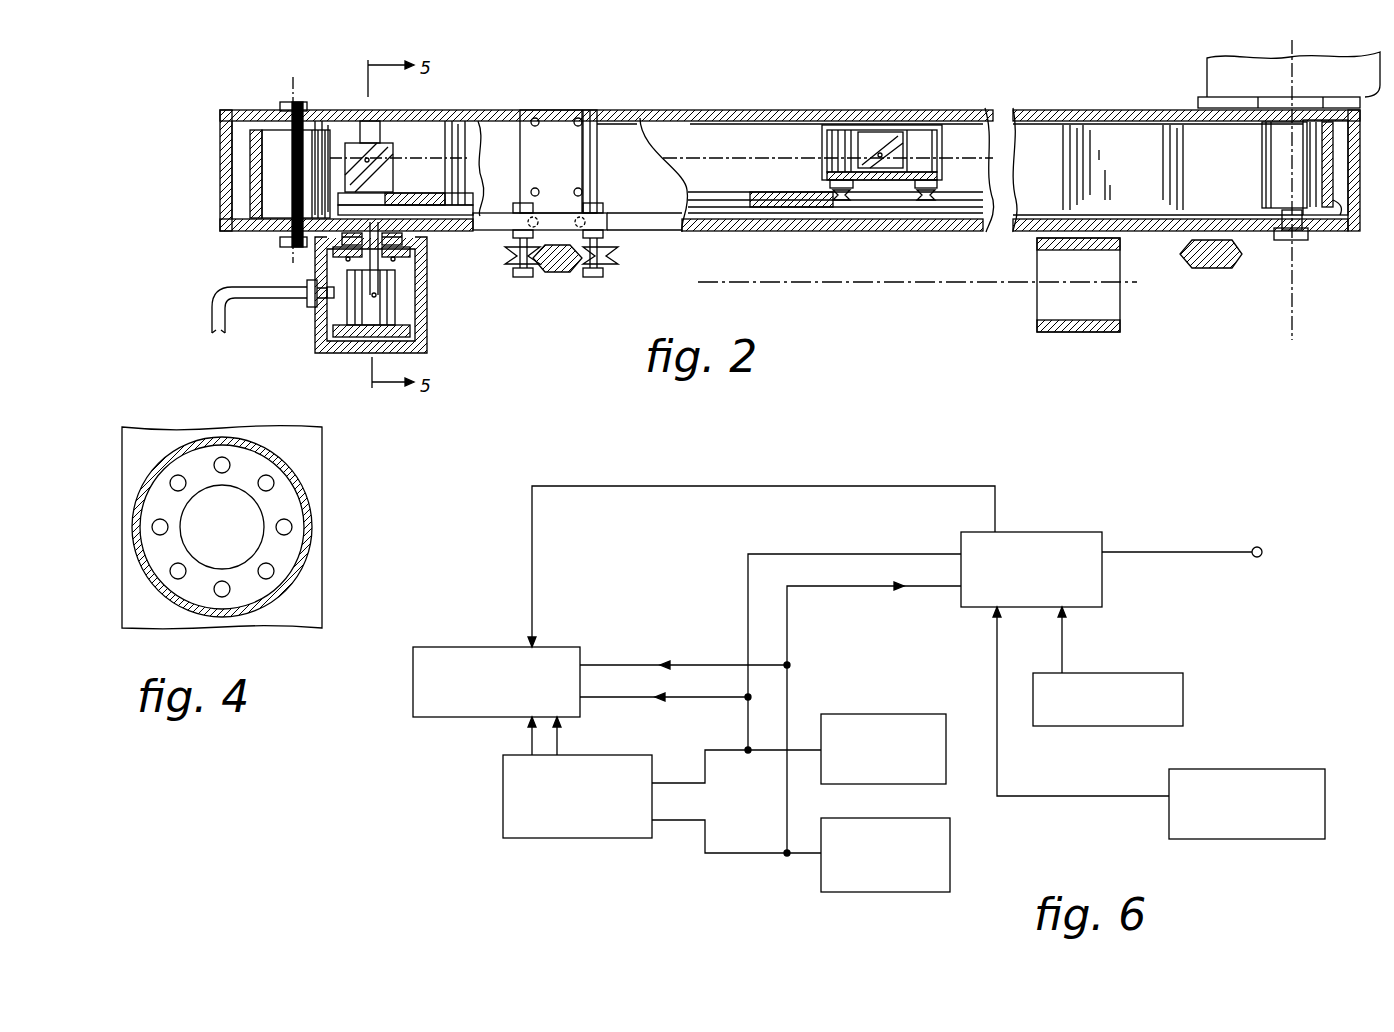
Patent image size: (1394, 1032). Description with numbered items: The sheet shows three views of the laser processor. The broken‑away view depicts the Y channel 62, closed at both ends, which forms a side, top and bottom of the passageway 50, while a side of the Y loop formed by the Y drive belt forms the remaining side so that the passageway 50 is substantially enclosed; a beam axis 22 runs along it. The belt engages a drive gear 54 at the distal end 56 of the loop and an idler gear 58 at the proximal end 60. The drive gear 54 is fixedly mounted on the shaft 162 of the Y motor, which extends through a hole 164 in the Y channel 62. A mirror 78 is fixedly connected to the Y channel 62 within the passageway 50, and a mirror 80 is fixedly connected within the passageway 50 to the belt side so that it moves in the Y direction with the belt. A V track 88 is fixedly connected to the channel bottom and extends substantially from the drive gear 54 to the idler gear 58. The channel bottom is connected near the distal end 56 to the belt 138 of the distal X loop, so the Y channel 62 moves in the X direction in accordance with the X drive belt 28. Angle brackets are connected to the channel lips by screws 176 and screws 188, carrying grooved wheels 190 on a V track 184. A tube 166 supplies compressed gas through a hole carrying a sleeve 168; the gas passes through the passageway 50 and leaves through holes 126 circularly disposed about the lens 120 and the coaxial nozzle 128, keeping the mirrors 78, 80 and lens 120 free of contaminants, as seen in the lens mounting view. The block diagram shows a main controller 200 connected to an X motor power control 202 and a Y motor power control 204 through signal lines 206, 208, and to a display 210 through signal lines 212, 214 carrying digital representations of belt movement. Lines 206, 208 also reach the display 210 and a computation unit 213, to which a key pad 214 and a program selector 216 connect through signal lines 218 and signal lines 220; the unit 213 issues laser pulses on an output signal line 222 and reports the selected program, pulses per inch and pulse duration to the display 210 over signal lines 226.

In FIG. 2, the laser beam axis 22 is at (720, 158).
In FIG. 2, the X drive belt 28 is at (318, 343).
In FIG. 2, the passageway 50 is at (752, 188).
In FIG. 2, the drive gear 54 is at (1294, 184).
In FIG. 2, the distal end 56 is at (1338, 205).
In FIG. 2, the idler gear 58 is at (300, 186).
In FIG. 2, the proximal end 60 is at (250, 165).
In FIG. 2, the Y channel 62 is at (808, 107).
In FIG. 2, the mirror 78 is at (395, 150).
In FIG. 2, the mirror 80 is at (915, 125).
In FIG. 2, the V track 88 is at (775, 207).
In FIG. 4, the lens 120 is at (242, 556).
In FIG. 4, the holes 126 is at (180, 478).
In FIG. 4, the nozzle 128 is at (305, 483).
In FIG. 2, the belt 138 is at (1058, 332).
In FIG. 2, the shaft 162 is at (1307, 232).
In FIG. 2, the hole 164 is at (1282, 127).
In FIG. 2, the tube 166 is at (215, 287).
In FIG. 2, the sleeve 168 is at (312, 305).
In FIG. 2, the screws 176 is at (1217, 268).
In FIG. 2, the V track 184 is at (558, 272).
In FIG. 2, the screws 188 is at (540, 120).
In FIG. 2, the grooved wheels 190 is at (505, 262).
In FIG. 6, the main controller 200 is at (600, 838).
In FIG. 6, the X motor power control 202 is at (902, 714).
In FIG. 6, the Y motor power control 204 is at (925, 818).
In FIG. 6, the signal line 206 is at (866, 554).
In FIG. 6, the signal line 208 is at (882, 586).
In FIG. 6, the display 210 is at (472, 647).
In FIG. 6, the signal line 212 is at (532, 740).
In FIG. 6, the computation unit 213 is at (1047, 532).
In FIG. 6, the key pad 214 is at (1138, 673).
In FIG. 6, the program selector 216 is at (1250, 769).
In FIG. 6, the signal lines 218 is at (1062, 640).
In FIG. 6, the signal lines 220 is at (997, 645).
In FIG. 6, the output signal line 222 is at (1183, 552).
In FIG. 6, the signal lines 226 is at (782, 486).